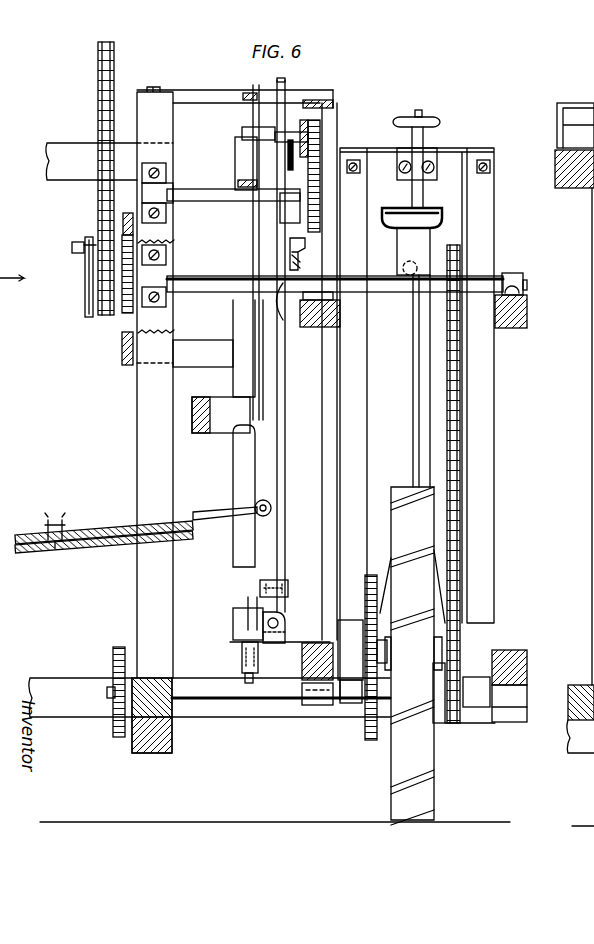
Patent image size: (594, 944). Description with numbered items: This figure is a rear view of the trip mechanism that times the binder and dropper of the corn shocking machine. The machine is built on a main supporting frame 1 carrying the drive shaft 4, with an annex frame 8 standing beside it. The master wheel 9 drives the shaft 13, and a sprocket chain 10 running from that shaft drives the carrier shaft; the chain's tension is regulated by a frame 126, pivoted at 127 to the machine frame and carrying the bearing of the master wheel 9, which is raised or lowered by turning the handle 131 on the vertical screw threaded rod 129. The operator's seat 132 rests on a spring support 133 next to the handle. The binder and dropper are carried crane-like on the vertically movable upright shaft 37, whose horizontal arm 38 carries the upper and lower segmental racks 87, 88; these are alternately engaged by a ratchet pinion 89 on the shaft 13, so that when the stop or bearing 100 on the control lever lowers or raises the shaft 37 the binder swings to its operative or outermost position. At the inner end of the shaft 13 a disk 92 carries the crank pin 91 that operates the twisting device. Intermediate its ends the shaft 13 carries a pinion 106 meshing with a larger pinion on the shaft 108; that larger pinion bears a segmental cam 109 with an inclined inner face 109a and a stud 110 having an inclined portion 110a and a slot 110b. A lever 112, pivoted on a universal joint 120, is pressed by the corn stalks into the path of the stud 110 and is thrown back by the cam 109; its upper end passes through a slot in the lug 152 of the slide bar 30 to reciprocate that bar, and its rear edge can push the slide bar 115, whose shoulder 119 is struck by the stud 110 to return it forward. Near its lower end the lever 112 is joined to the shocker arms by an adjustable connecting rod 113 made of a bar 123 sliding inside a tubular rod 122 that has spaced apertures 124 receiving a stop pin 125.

The main supporting frame 1 is at (170, 742).
The drive shaft 4 is at (240, 700).
The annex frame 8 is at (65, 182).
The master wheel 9 is at (418, 756).
The sprocket chain 10 is at (98, 114).
The shaft 13 is at (382, 292).
The slide bar 30 is at (330, 122).
The upright shaft 37 is at (265, 418).
The horizontal arm 38 is at (227, 428).
The upper segmental rack 87 is at (123, 224).
The lower segmental rack 88 is at (123, 358).
The ratchet pinion 89 is at (122, 313).
The crank pin 91 is at (72, 253).
The disk 92 is at (88, 297).
The stop or bearing 100 is at (240, 638).
The pinion 106 is at (337, 312).
The shaft 108 is at (205, 189).
The segmental cam 109 is at (318, 150).
The inclined inner face 109a is at (297, 170).
The stud or pin 110 is at (290, 247).
The inclined portion 110a is at (293, 263).
The slot 110b is at (290, 257).
The lever 112 is at (277, 472).
The adjustable connecting rod 113 is at (218, 520).
The slide bar 115 is at (283, 300).
The shoulder 119 is at (297, 213).
The universal joint 120 is at (283, 598).
The tubular rod 122 is at (100, 533).
The bar 123 is at (200, 521).
The apertures 124 is at (42, 540).
The stop pin 125 is at (67, 544).
The frame 126 is at (353, 662).
The pivot 127 is at (495, 720).
The screw threaded rod 129 is at (419, 400).
The handle 131 is at (440, 117).
The operator's seat 132 is at (440, 213).
The spring support 133 is at (430, 243).
The lug 152 is at (333, 100).